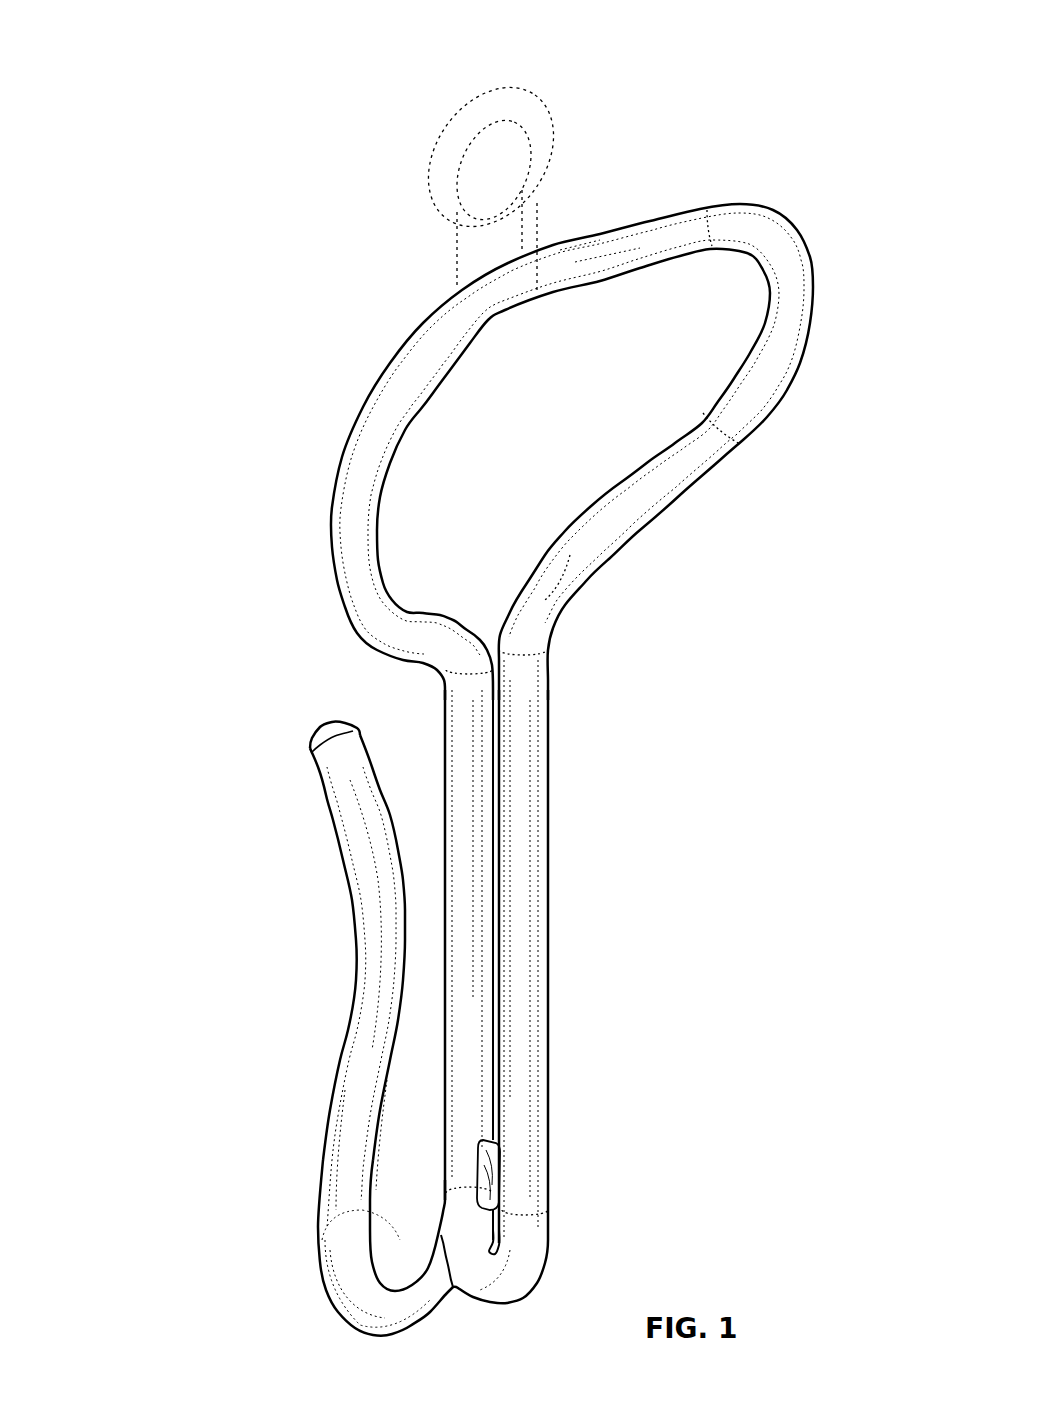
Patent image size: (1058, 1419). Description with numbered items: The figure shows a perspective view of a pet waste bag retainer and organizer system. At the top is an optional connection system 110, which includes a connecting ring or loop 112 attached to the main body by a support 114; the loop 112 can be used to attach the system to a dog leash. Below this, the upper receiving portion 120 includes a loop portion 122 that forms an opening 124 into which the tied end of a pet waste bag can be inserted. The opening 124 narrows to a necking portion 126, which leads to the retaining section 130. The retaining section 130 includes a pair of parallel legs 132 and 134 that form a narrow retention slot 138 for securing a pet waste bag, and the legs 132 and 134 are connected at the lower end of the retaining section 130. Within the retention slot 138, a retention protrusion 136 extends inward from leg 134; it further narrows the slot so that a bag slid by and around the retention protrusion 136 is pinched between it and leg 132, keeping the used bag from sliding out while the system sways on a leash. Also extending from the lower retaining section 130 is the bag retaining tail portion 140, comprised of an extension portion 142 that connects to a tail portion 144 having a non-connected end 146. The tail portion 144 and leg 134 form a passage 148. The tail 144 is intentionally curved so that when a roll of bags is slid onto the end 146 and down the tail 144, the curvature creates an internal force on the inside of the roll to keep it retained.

The connection system 110 is at (385, 154).
The connecting ring or loop 112 is at (550, 142).
The support 114 is at (533, 227).
The receiving portion 120 is at (330, 378).
The loop portion 122 is at (683, 225).
The opening 124 is at (717, 318).
The necking portion 126 is at (489, 622).
The retaining section 130 is at (612, 1010).
The leg 132 is at (537, 770).
The leg 134 is at (477, 983).
The retention protrusion 136 is at (500, 1156).
The retention slot 138 is at (493, 873).
The bag retaining tail portion 140 is at (242, 1017).
The extension portion 142 is at (360, 1308).
The tail portion 144 is at (363, 989).
The non-connected end 146 is at (324, 735).
The passage 148 is at (397, 1148).